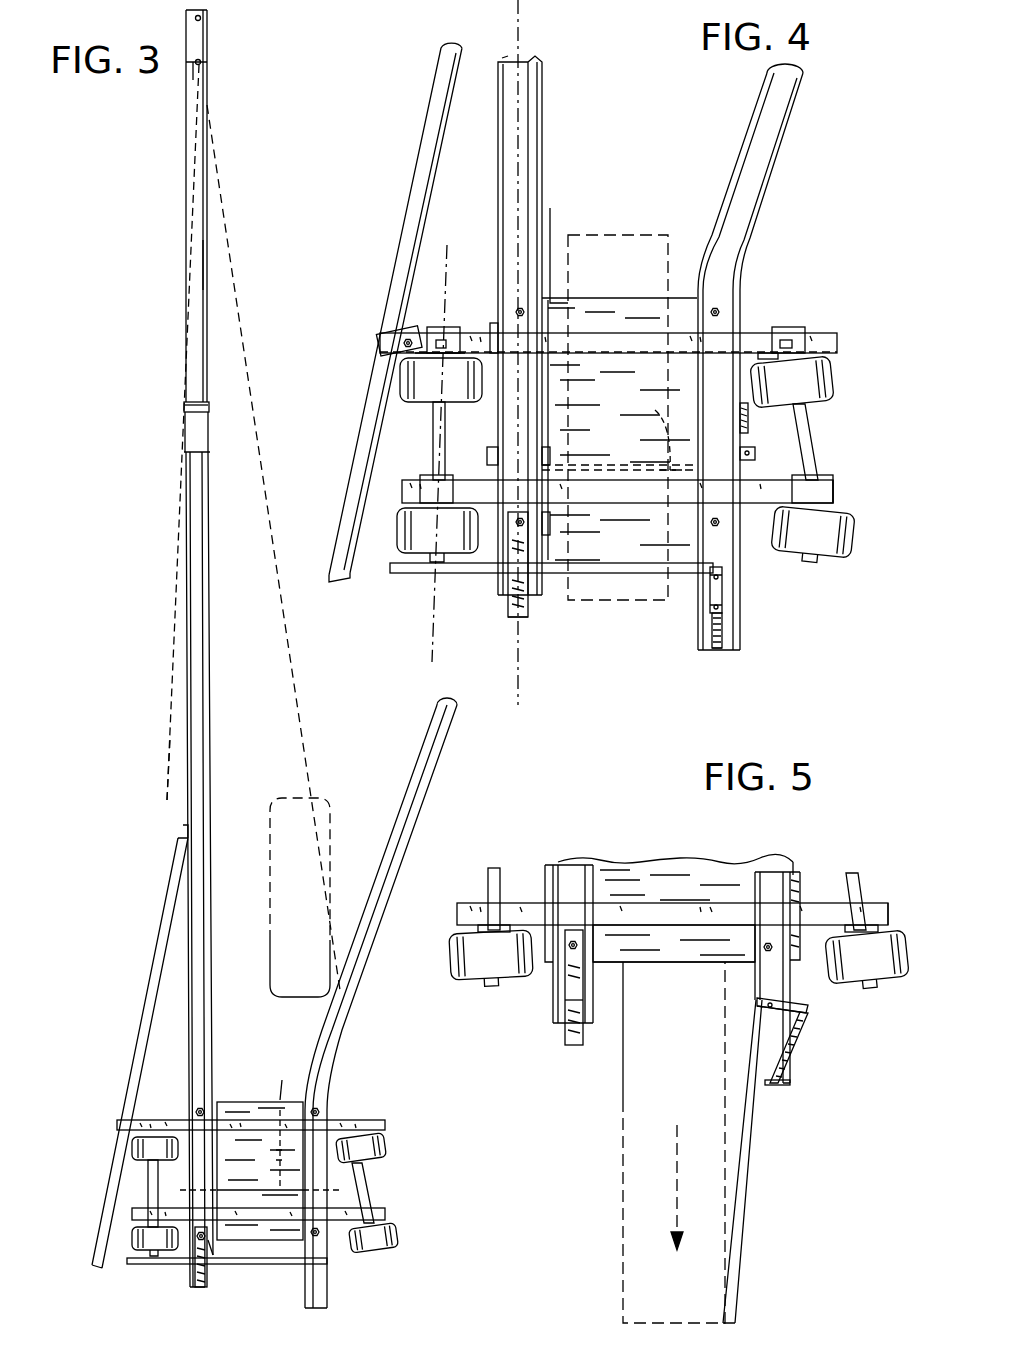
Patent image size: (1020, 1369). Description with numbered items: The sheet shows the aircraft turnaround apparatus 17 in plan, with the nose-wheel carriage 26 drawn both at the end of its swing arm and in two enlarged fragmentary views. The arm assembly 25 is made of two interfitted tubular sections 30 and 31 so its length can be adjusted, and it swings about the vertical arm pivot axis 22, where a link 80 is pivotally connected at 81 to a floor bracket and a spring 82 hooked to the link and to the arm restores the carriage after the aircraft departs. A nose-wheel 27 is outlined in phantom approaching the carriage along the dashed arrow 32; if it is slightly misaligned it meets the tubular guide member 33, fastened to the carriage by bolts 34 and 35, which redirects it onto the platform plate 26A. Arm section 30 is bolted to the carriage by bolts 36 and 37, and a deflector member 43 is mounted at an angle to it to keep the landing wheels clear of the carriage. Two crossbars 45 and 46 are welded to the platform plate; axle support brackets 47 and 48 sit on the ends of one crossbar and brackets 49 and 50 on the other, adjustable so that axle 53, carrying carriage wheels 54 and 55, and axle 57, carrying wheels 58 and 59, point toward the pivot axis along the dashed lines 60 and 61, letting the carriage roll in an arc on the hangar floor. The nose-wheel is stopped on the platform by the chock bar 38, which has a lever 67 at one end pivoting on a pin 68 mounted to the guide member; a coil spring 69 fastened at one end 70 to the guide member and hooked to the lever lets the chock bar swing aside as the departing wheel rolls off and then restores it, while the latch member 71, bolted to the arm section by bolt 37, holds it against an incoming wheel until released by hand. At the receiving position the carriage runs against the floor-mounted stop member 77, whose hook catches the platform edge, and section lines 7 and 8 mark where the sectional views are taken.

In FIG. 4, the section line 7 is at (526, 697).
In FIG. 4, the section line 8 is at (436, 645).
In FIG. 3, the turnaround apparatus 17 is at (146, 682).
In FIG. 3, the arm pivot axis 22 is at (201, 18).
In FIG. 3, the arm assembly 25 is at (224, 468).
In FIG. 4, the arm assembly 25 is at (548, 98).
In FIG. 3, the nose-wheel carriage 26 is at (233, 1095).
In FIG. 4, the nose-wheel carriage 26 is at (686, 285).
In FIG. 5, the nose-wheel carriage 26 is at (738, 855).
In FIG. 3, the platform plate 26A is at (290, 1262).
In FIG. 4, the platform plate 26A is at (552, 262).
In FIG. 5, the platform plate 26A is at (682, 875).
In FIG. 3, the nose-wheel 27 is at (305, 890).
In FIG. 4, the nose-wheel 27 is at (640, 245).
In FIG. 5, the nose-wheel 27 is at (622, 1102).
In FIG. 3, the tubular arm section 30 is at (195, 706).
In FIG. 4, the tubular arm section 30 is at (540, 170).
In FIG. 5, the tubular arm section 30 is at (548, 875).
In FIG. 3, the tubular arm section 31 is at (200, 275).
In FIG. 3, the dashed arrow 32 is at (262, 1090).
In FIG. 3, the tubular guide member 33 is at (360, 946).
In FIG. 4, the tubular guide member 33 is at (757, 178).
In FIG. 5, the tubular guide member 33 is at (785, 870).
In FIG. 3, the bolt 34 is at (320, 1110).
In FIG. 4, the bolt 34 is at (720, 310).
In FIG. 3, the bolt 35 is at (318, 1236).
In FIG. 4, the bolt 35 is at (720, 528).
In FIG. 3, the bolt 36 is at (196, 1110).
In FIG. 4, the bolt 36 is at (519, 306).
In FIG. 3, the bolt 37 is at (198, 1240).
In FIG. 4, the bolt 37 is at (516, 530).
In FIG. 5, the bolt 37 is at (570, 955).
In FIG. 3, the chock bar 38 is at (232, 1266).
In FIG. 4, the chock bar 38 is at (548, 575).
In FIG. 5, the chock bar 38 is at (752, 1183).
In FIG. 3, the deflector member 43 is at (168, 896).
In FIG. 4, the deflector member 43 is at (410, 258).
In FIG. 4, the crossbar 45 is at (830, 349).
In FIG. 4, the crossbar 46 is at (834, 490).
In FIG. 5, the crossbar 46 is at (888, 912).
In FIG. 4, the axle support bracket 47 is at (450, 327).
In FIG. 4, the axle support bracket 48 is at (788, 327).
In FIG. 4, the axle support bracket 49 is at (448, 478).
In FIG. 4, the axle support bracket 50 is at (822, 477).
In FIG. 3, the axle 53 is at (150, 1178).
In FIG. 4, the axle 53 is at (436, 458).
In FIG. 5, the axle 53 is at (496, 868).
In FIG. 3, the carriage wheel 54 is at (148, 1148).
In FIG. 4, the carriage wheel 54 is at (420, 372).
In FIG. 3, the carriage wheel 55 is at (135, 1238).
In FIG. 4, the carriage wheel 55 is at (410, 537).
In FIG. 5, the carriage wheel 55 is at (480, 960).
In FIG. 3, the axle 57 is at (372, 1190).
In FIG. 4, the axle 57 is at (810, 455).
In FIG. 5, the axle 57 is at (855, 872).
In FIG. 3, the wheel 58 is at (380, 1142).
In FIG. 4, the wheel 58 is at (815, 392).
In FIG. 3, the wheel 59 is at (398, 1242).
In FIG. 4, the wheel 59 is at (850, 535).
In FIG. 5, the wheel 59 is at (880, 965).
In FIG. 3, the dashed line 60 is at (167, 796).
In FIG. 3, the dashed line 61 is at (297, 728).
In FIG. 4, the lever 67 is at (708, 595).
In FIG. 5, the lever 67 is at (785, 1005).
In FIG. 4, the pin 68 is at (720, 578).
In FIG. 5, the pin 68 is at (755, 1006).
In FIG. 4, the coil spring 69 is at (730, 636).
In FIG. 5, the coil spring 69 is at (790, 1040).
In FIG. 4, the spring end 70 is at (716, 652).
In FIG. 5, the spring end 70 is at (780, 1086).
In FIG. 4, the latch member 71 is at (532, 628).
In FIG. 5, the latch member 71 is at (560, 1033).
In FIG. 3, the stop member 77 is at (285, 1110).
In FIG. 4, the stop member 77 is at (657, 414).
In FIG. 3, the link 80 is at (190, 115).
In FIG. 3, the pivot connection 81 is at (201, 64).
In FIG. 3, the spring 82 is at (186, 220).